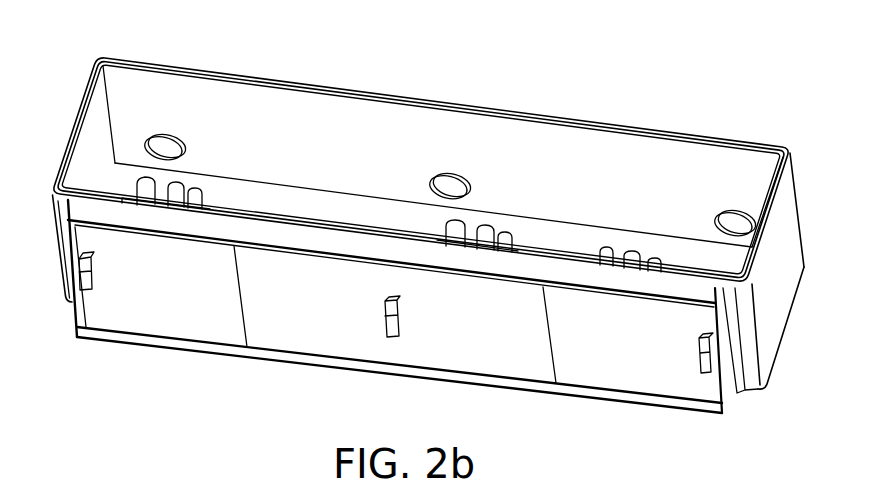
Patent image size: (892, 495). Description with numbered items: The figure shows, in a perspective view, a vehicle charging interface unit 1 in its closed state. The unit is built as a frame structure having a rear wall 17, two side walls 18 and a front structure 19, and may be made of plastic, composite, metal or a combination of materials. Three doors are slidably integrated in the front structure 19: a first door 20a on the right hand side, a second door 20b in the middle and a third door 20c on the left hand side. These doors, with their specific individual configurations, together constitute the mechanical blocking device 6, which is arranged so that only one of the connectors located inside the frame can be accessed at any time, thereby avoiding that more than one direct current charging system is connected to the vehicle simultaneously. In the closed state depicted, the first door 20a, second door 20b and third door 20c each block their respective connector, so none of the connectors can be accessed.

The charging interface unit 1 is at (712, 70).
The rear wall 17 is at (577, 146).
The side walls 18 is at (71, 115).
The front structure 19 is at (722, 414).
The mechanical blocking device 6 is at (482, 323).
The first door 20a is at (633, 343).
The second door 20b is at (328, 302).
The third door 20c is at (160, 277).